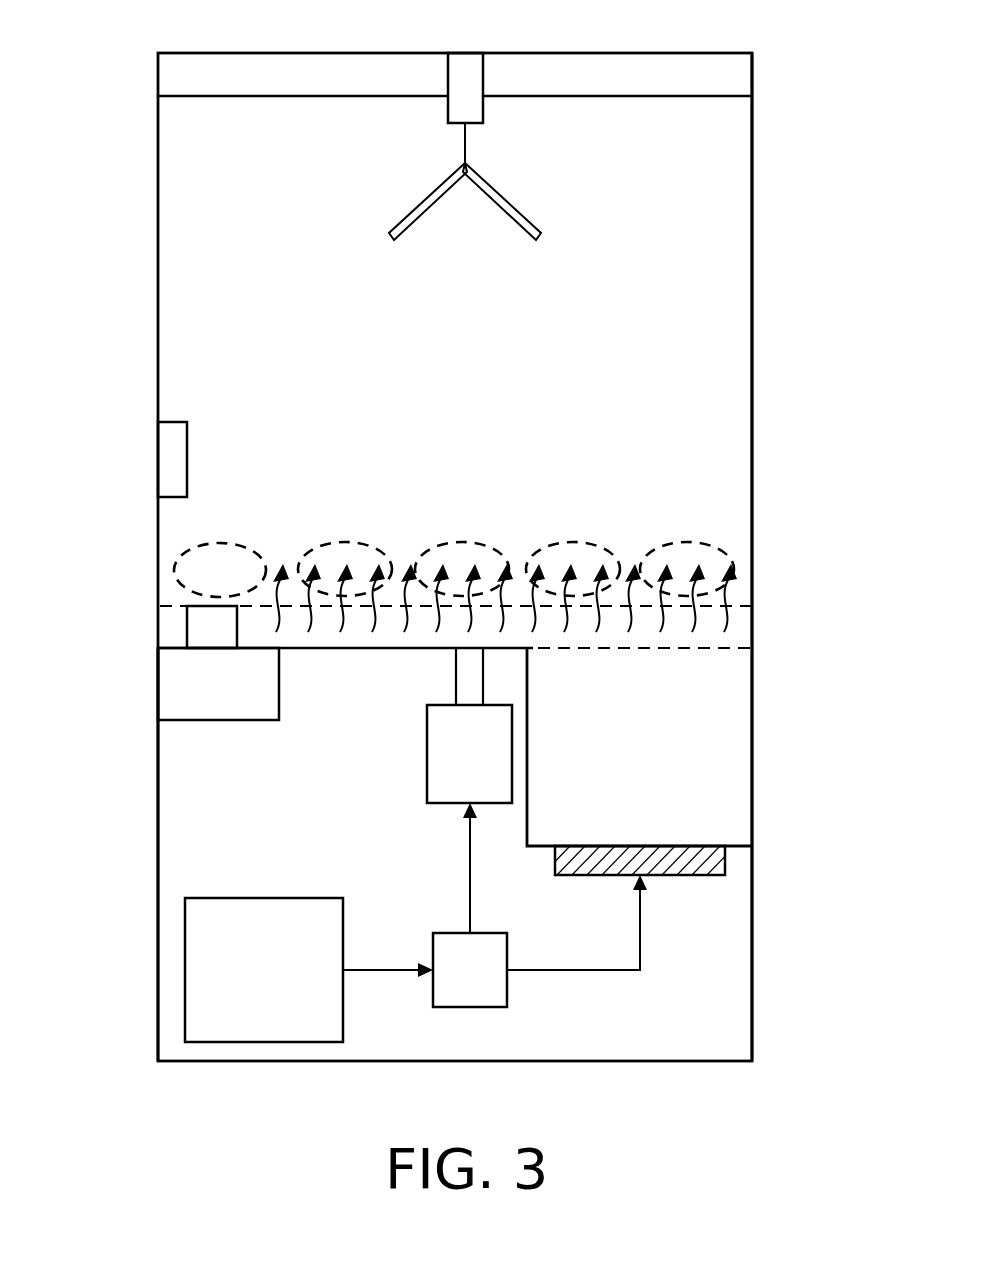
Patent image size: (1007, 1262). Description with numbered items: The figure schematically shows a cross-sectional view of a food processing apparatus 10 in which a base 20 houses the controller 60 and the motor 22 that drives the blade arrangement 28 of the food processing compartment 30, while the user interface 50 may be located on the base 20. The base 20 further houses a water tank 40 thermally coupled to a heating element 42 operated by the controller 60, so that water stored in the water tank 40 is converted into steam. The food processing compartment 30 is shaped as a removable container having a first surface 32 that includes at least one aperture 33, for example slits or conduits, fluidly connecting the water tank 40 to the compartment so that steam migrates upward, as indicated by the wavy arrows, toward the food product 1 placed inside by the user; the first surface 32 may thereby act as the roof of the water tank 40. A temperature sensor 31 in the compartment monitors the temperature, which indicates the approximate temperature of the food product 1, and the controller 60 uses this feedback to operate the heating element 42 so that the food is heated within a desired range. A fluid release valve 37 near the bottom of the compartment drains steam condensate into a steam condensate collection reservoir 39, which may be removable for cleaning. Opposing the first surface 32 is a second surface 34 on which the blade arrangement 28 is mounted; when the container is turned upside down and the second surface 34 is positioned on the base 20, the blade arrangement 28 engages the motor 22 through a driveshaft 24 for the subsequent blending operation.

The food processing apparatus 10 is at (138, 73).
The second surface 34 is at (753, 75).
The food processing compartment 30 is at (753, 350).
The blade arrangement 28 is at (399, 238).
The temperature sensor 31 is at (172, 450).
The food product 1 is at (175, 565).
The fluid release valve 37 is at (185, 628).
The first surface 32 is at (753, 627).
The aperture 33 is at (712, 650).
The steam condensate collection reservoir 39 is at (175, 682).
The base 20 is at (157, 795).
The driveshaft 24 is at (455, 676).
The motor 22 is at (427, 752).
The water tank 40 is at (753, 738).
The heating element 42 is at (725, 860).
The user interface 50 is at (203, 960).
The controller 60 is at (507, 992).